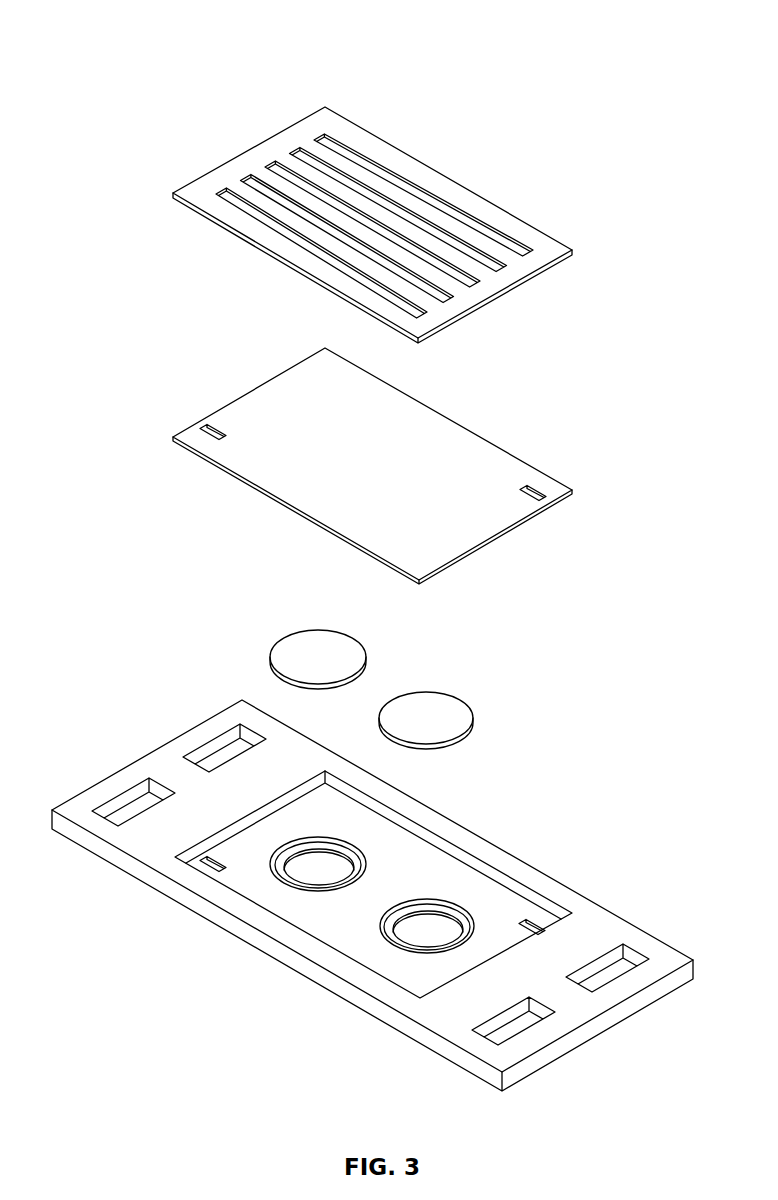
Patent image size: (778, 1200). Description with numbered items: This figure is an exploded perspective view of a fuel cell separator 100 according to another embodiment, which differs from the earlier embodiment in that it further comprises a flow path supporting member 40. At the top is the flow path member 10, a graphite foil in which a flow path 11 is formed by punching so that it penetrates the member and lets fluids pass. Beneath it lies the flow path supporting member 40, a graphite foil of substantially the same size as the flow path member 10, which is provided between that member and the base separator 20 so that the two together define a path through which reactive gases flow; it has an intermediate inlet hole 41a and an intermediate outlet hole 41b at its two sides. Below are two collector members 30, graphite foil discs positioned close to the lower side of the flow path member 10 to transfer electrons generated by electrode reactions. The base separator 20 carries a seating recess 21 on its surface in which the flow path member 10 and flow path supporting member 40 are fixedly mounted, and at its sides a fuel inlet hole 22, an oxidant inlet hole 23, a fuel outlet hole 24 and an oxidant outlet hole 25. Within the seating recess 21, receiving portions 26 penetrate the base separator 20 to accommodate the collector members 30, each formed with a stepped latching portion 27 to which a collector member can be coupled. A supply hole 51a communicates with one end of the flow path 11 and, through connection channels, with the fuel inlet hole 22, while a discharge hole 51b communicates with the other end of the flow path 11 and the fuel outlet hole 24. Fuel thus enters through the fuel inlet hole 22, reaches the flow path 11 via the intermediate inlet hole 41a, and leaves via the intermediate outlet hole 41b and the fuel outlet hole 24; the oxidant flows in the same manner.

The fuel cell separator 100 is at (560, 126).
The flow path member 10 is at (428, 167).
The flow path 11 is at (327, 133).
The flow path supporting member 40 is at (475, 432).
The intermediate inlet hole 41a is at (534, 493).
The intermediate outlet hole 41b is at (208, 430).
The collector member 30 is at (338, 643).
The base separator 20 is at (633, 927).
The seating recess 21 is at (497, 887).
The fuel inlet hole 22 is at (612, 972).
The oxidant inlet hole 23 is at (522, 1028).
The fuel outlet hole 24 is at (140, 807).
The oxidant outlet hole 25 is at (238, 747).
The receiving portion 26 is at (402, 950).
The stepped latching portion 27 is at (378, 925).
The supply hole 51a is at (535, 920).
The discharge hole 51b is at (210, 868).